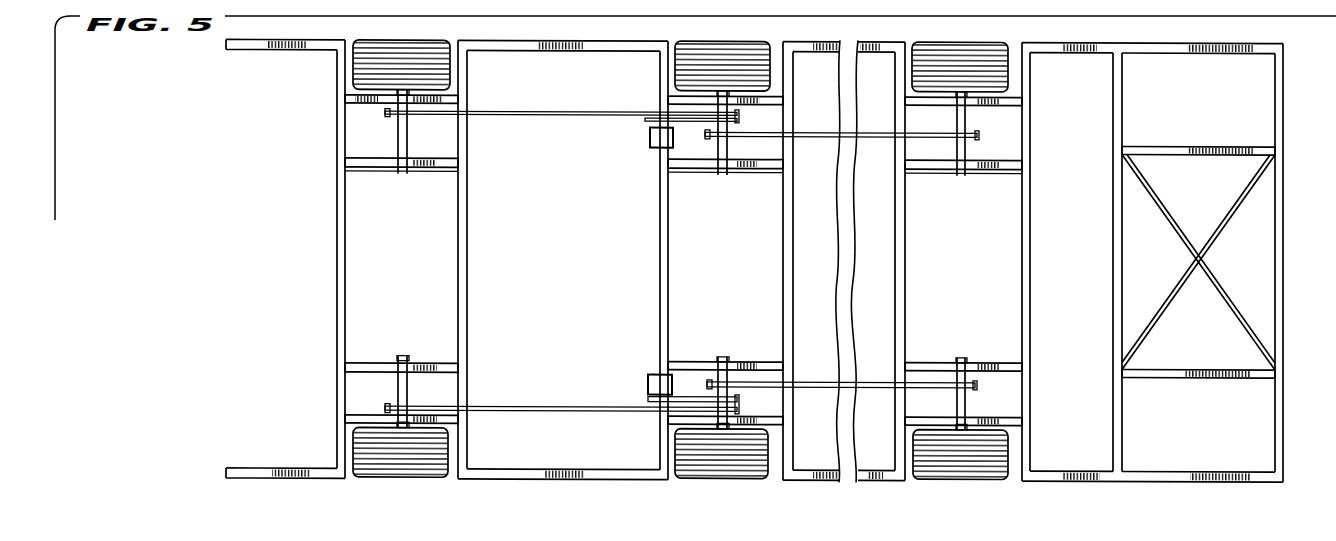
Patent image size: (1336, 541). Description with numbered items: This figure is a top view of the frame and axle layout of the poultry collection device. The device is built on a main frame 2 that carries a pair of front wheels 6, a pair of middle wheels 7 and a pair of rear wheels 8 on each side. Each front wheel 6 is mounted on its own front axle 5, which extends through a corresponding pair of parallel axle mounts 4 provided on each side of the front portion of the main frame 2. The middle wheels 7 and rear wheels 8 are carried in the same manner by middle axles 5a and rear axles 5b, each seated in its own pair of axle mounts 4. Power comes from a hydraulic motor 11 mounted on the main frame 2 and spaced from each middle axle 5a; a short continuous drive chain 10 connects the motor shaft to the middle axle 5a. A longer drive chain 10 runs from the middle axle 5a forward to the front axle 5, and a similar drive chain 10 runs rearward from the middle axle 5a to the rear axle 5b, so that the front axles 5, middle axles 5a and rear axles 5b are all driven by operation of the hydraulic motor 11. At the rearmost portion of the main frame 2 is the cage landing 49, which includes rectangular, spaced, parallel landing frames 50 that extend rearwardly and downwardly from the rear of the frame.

The main frame 2 is at (333, 148).
The axle mounts 4 is at (367, 163).
The front axle 5 is at (407, 137).
The middle axle 5a is at (725, 176).
The rear axle 5b is at (965, 176).
The front wheels 6 is at (393, 41).
The middle wheels 7 is at (726, 41).
The rear wheels 8 is at (957, 41).
The drive chain 10 is at (582, 112).
The hydraulic motor 11 is at (650, 136).
The cage landing 49 is at (1285, 365).
The landing frames 50 is at (1191, 52).